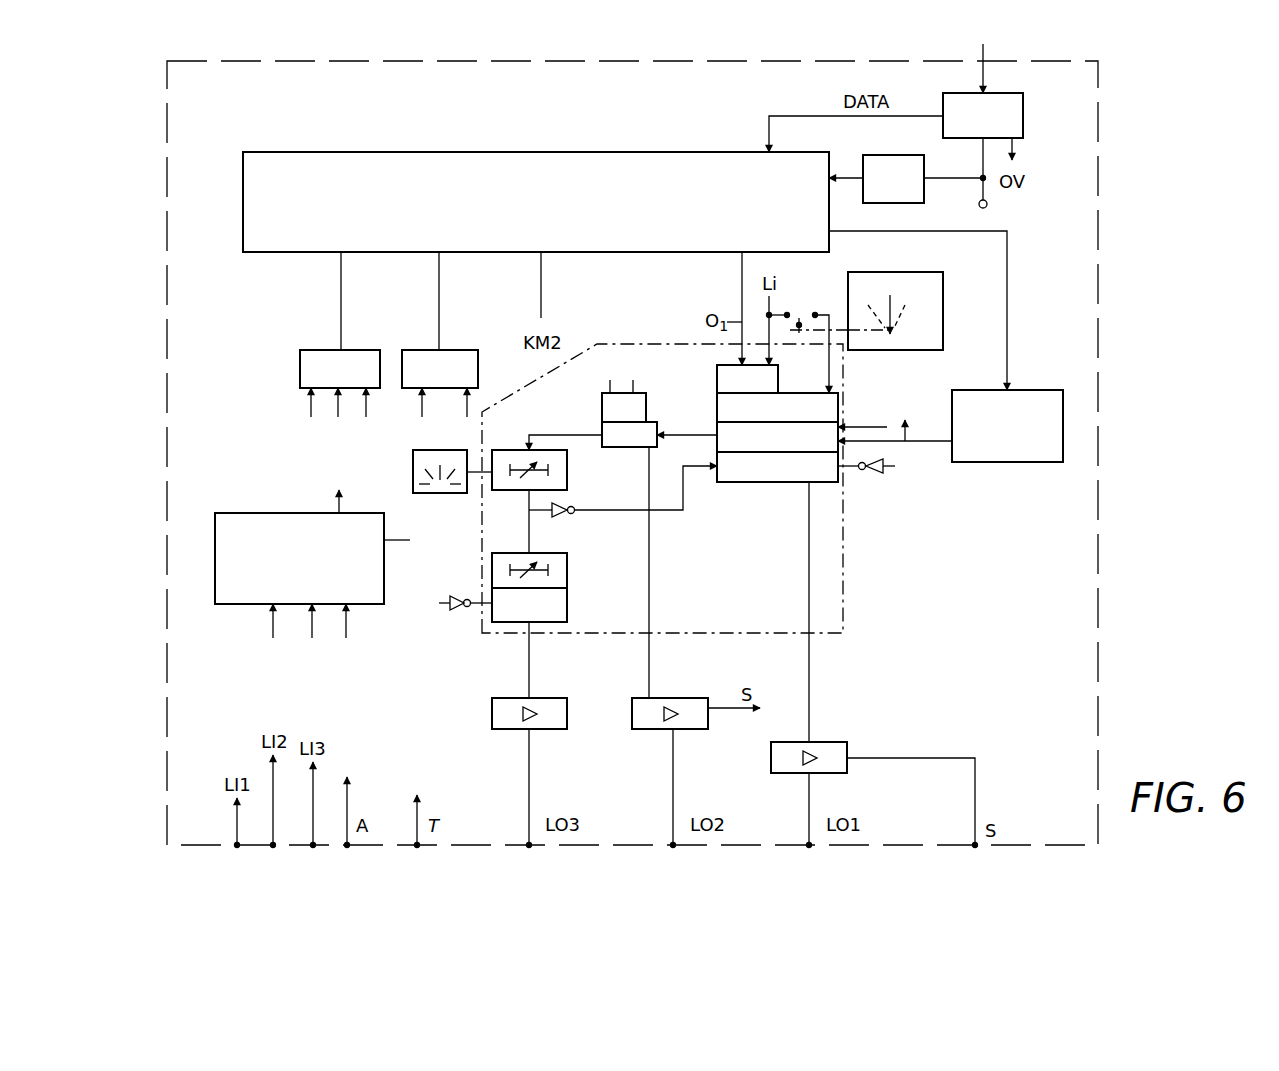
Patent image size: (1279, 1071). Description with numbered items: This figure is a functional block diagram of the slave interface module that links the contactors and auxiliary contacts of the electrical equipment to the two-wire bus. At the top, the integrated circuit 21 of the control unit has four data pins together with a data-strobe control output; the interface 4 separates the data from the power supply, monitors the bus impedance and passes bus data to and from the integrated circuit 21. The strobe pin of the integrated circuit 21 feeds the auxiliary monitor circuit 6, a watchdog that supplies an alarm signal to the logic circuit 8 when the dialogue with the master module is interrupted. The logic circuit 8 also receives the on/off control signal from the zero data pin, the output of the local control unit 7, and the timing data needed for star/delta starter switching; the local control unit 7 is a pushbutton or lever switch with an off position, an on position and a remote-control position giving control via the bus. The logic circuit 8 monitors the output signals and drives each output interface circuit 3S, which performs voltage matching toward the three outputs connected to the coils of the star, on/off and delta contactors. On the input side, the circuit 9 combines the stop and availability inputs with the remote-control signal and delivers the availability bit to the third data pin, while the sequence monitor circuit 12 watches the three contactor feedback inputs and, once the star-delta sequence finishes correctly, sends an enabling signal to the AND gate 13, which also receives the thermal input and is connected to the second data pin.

The integrated circuit 21 is at (395, 150).
The interface 4 is at (1023, 117).
The AND gate 13 is at (460, 351).
The circuit 9 is at (300, 362).
The local control unit 7 is at (943, 329).
The auxiliary monitor circuit 6 is at (1030, 390).
The sequence monitor circuit 12 is at (270, 513).
The logic circuit 8 is at (843, 592).
The output interface circuit 3S is at (510, 730).